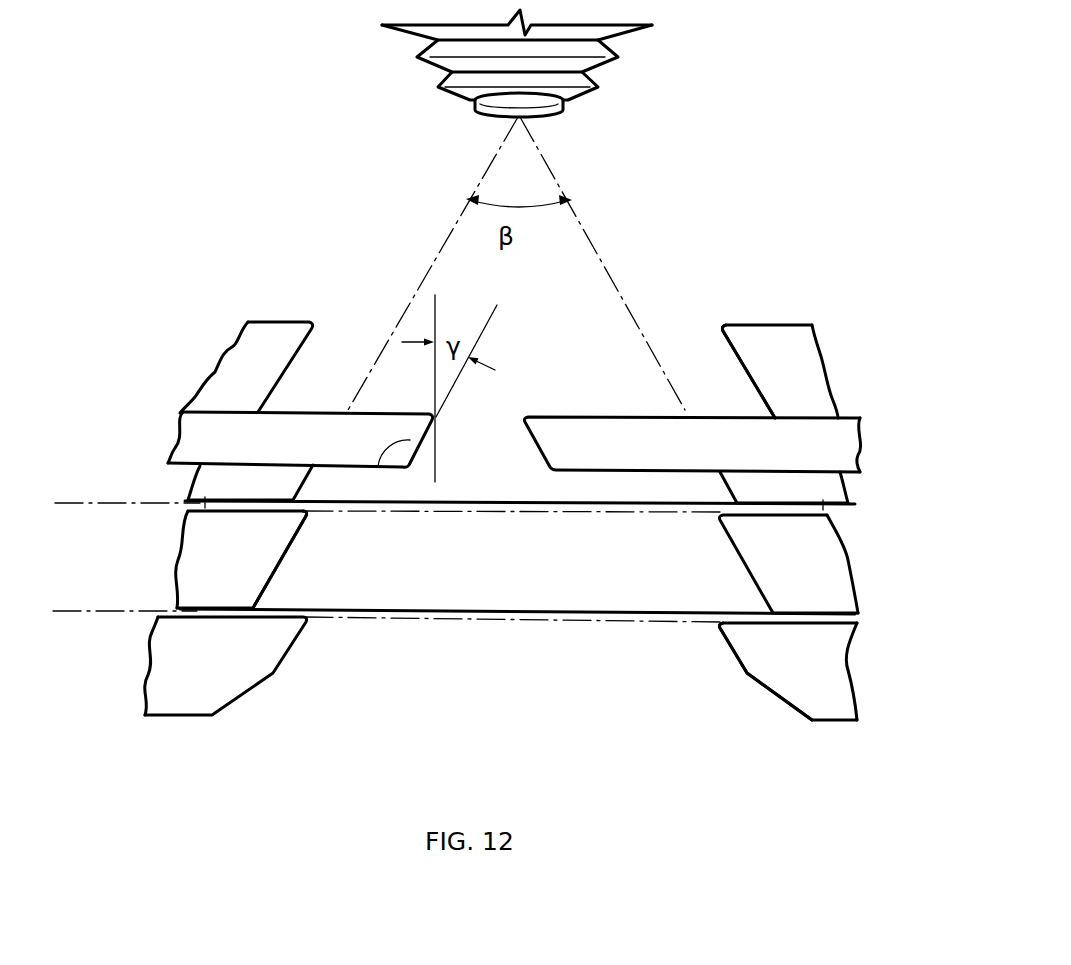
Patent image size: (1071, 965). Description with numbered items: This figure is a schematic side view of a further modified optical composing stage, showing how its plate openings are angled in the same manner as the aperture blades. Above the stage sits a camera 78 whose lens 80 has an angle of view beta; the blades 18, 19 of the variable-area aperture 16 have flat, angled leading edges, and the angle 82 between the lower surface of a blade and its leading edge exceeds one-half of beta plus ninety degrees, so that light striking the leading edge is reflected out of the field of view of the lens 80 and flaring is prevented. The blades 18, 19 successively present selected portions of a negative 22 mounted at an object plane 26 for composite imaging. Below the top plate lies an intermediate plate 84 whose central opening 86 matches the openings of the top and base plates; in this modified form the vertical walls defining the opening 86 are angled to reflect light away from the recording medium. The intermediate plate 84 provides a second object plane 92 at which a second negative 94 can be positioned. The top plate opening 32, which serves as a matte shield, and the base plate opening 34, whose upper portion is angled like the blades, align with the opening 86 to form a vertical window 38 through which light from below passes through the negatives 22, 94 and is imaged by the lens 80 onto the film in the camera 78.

The camera 78 is at (620, 62).
The lens 80 is at (565, 108).
The variable-area aperture 16 is at (514, 367).
The central opening of the top plate 32 is at (735, 358).
The aperture-defining blade 18 is at (230, 412).
The aperture-defining blade 19 is at (572, 415).
The angle between lower blade surface and leading edge 82 is at (377, 452).
The object plane 26 is at (120, 508).
The negative 22 is at (432, 513).
The second object plane 92 is at (112, 613).
The second negative 94 is at (503, 620).
The central opening of the intermediate plate 86 is at (275, 577).
The intermediate plate 84 is at (752, 542).
The central opening of the base plate 34 is at (730, 650).
The window 38 is at (605, 675).